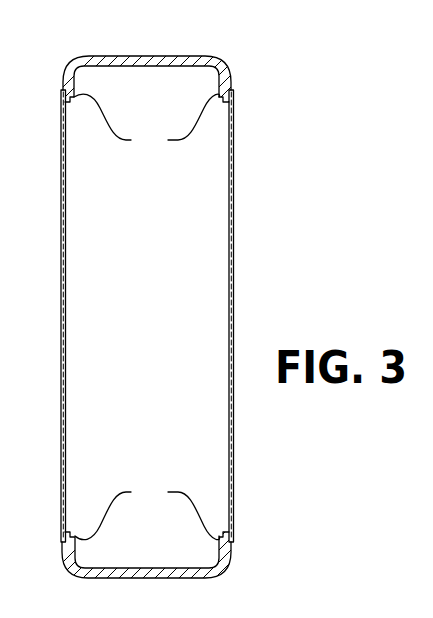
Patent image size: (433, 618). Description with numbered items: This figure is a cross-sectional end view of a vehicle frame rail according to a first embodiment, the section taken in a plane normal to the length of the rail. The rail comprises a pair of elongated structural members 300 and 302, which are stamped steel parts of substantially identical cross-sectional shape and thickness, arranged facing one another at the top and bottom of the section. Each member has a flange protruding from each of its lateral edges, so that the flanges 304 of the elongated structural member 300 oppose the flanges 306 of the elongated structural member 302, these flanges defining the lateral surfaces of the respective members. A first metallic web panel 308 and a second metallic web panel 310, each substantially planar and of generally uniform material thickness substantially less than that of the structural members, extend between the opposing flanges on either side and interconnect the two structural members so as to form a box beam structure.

The elongated structural member 300 is at (129, 56).
The elongated structural member 302 is at (188, 580).
The flanges 304 is at (147, 125).
The flanges 306 is at (147, 511).
The first metallic web panel 308 is at (62, 377).
The second metallic web panel 310 is at (234, 212).